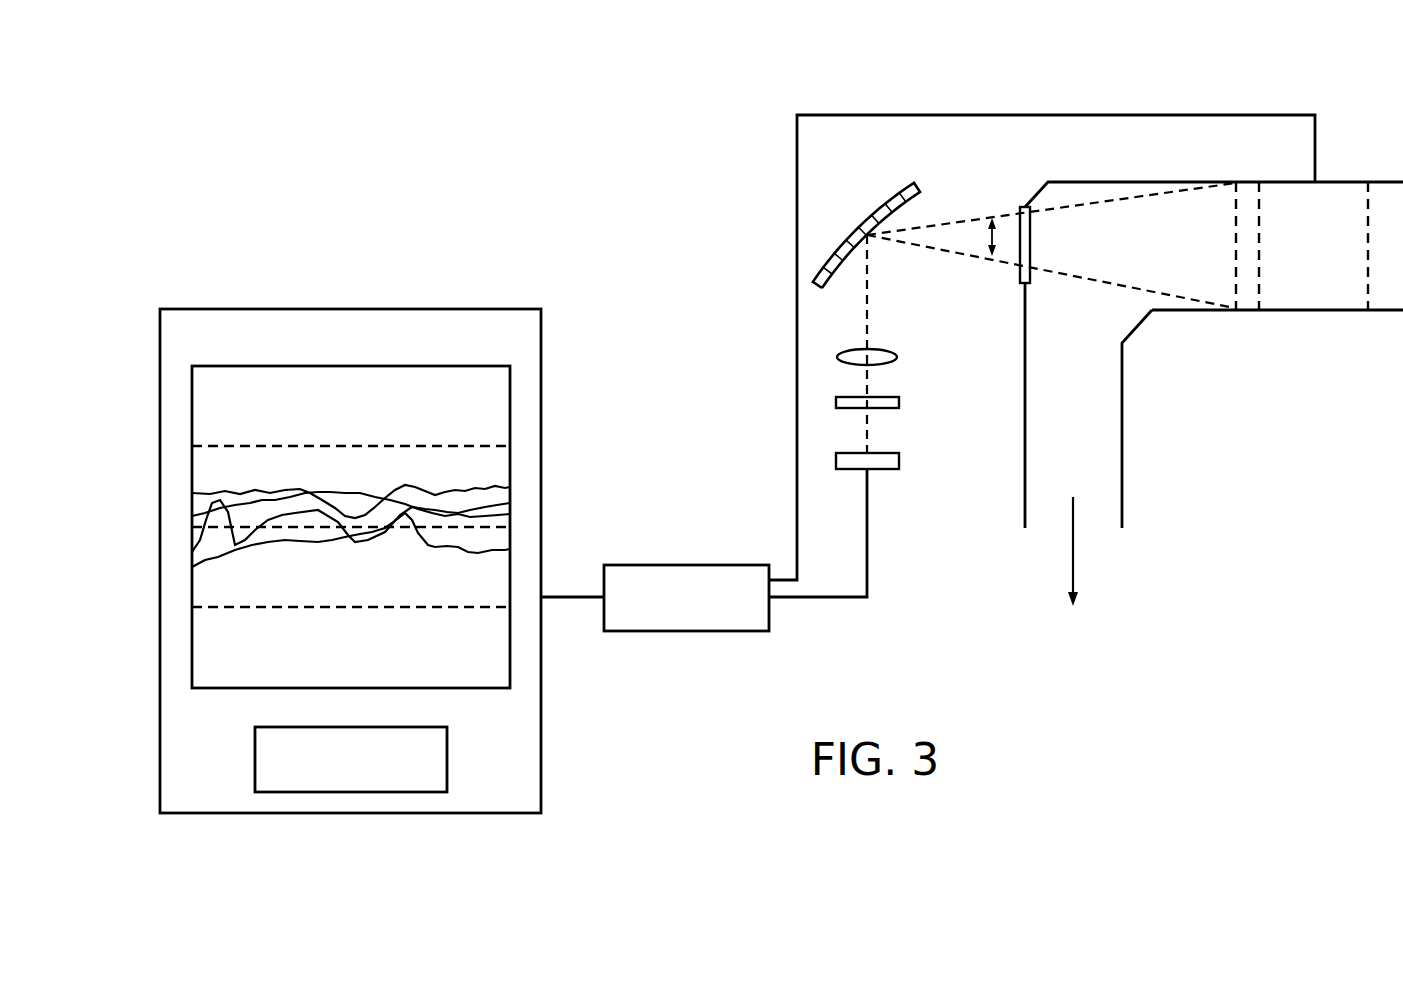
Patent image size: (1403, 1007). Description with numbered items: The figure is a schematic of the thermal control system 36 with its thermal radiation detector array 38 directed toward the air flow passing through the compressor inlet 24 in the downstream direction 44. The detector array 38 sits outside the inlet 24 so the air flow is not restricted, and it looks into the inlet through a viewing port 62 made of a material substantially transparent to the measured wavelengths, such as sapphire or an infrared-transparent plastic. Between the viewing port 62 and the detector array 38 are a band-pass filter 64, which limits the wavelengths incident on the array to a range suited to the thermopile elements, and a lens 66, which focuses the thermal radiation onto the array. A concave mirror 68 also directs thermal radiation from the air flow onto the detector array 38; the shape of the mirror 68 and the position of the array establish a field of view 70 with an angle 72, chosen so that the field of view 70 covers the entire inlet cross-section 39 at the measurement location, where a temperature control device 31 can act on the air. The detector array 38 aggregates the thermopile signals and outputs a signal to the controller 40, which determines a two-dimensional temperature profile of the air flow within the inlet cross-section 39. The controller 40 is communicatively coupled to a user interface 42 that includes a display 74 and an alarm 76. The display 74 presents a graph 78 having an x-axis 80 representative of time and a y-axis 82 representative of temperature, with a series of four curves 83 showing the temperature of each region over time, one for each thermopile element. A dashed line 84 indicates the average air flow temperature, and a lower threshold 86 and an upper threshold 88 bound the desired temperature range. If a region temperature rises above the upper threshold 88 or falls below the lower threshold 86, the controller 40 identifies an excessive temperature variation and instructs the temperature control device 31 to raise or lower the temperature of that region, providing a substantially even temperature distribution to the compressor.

The inlet 24 is at (1122, 435).
The temperature control device 31 is at (1313, 310).
The thermal control system 36 is at (700, 422).
The thermal radiation detector array 38 is at (884, 453).
The inlet cross-section 39 is at (1236, 214).
The controller 40 is at (687, 631).
The user interface 42 is at (349, 309).
The downstream direction 44 is at (1340, 143).
The viewing port 62 is at (1030, 232).
The filter 64 is at (884, 397).
The lens 66 is at (888, 346).
The mirror 68 is at (881, 203).
The field of view 70 is at (1130, 196).
The angle 72 is at (1002, 242).
The display 74 is at (481, 366).
The alarm 76 is at (447, 762).
The graph 78 is at (233, 625).
The x-axis 80 is at (432, 688).
The y-axis 82 is at (192, 393).
The curves 83 is at (354, 490).
The dashed line 84 is at (507, 538).
The lower threshold 86 is at (470, 607).
The upper threshold 88 is at (352, 446).